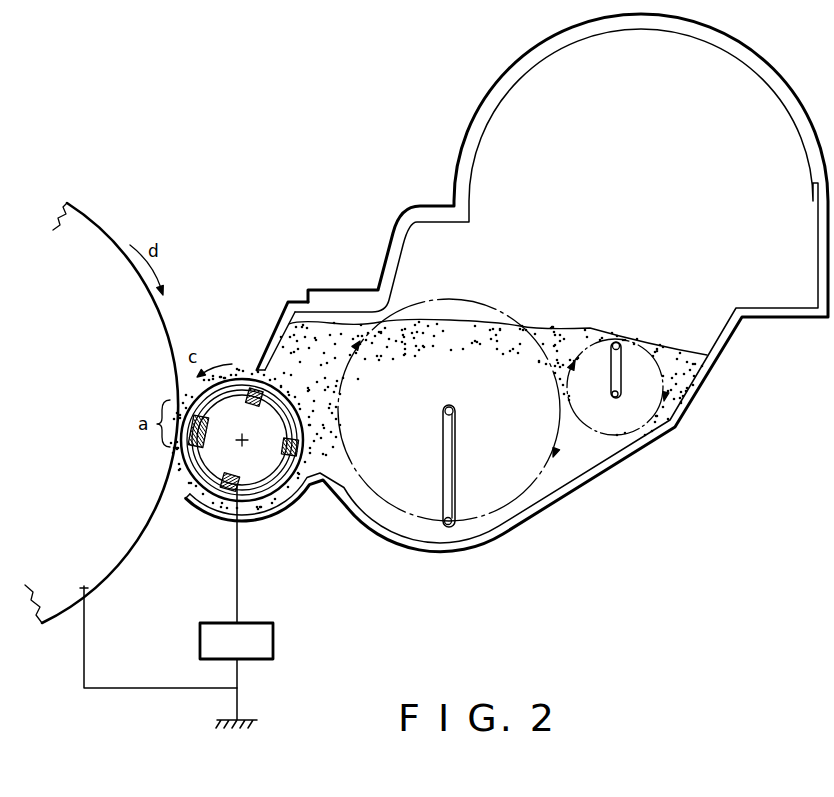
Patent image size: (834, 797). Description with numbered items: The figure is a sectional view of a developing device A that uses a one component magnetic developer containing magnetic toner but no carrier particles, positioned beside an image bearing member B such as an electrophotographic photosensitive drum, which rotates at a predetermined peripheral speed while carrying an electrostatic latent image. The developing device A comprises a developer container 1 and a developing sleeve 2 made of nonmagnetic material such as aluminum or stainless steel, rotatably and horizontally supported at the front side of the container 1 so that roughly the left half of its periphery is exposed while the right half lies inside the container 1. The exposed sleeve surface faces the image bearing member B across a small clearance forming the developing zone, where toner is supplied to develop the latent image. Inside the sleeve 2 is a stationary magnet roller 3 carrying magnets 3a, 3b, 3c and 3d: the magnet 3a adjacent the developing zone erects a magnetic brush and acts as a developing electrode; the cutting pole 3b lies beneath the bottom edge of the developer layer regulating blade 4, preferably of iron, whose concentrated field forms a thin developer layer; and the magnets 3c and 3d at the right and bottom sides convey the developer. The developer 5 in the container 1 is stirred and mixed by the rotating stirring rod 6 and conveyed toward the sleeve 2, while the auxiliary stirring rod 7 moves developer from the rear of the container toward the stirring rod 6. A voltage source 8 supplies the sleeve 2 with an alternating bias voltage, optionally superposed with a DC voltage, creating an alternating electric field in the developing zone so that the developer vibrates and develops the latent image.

The developer container 1 is at (600, 481).
The developing sleeve 2 is at (273, 498).
The magnet roller 3 is at (247, 483).
The magnet 3a is at (190, 417).
The magnet 3b is at (253, 387).
The magnet 3c is at (298, 447).
The magnet 3d is at (228, 490).
The developer layer regulating blade 4 is at (275, 347).
The one component magnetic developer 5 is at (463, 340).
The stirring rod 6 is at (448, 527).
The auxiliary stirring rod 7 is at (617, 342).
The voltage source 8 is at (273, 638).
The developing device A is at (450, 163).
The image bearing member B is at (92, 220).